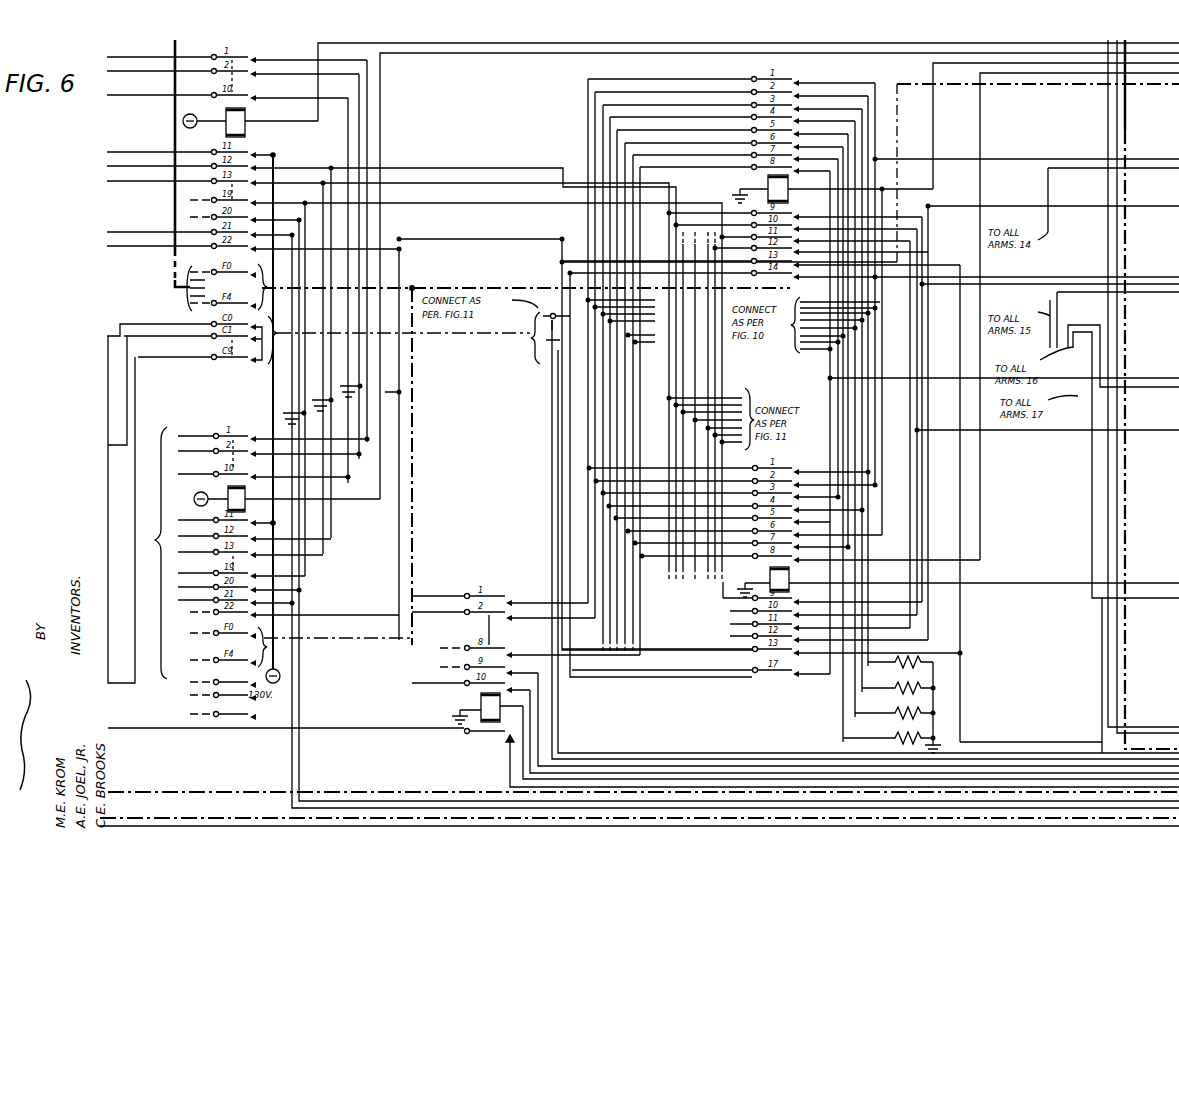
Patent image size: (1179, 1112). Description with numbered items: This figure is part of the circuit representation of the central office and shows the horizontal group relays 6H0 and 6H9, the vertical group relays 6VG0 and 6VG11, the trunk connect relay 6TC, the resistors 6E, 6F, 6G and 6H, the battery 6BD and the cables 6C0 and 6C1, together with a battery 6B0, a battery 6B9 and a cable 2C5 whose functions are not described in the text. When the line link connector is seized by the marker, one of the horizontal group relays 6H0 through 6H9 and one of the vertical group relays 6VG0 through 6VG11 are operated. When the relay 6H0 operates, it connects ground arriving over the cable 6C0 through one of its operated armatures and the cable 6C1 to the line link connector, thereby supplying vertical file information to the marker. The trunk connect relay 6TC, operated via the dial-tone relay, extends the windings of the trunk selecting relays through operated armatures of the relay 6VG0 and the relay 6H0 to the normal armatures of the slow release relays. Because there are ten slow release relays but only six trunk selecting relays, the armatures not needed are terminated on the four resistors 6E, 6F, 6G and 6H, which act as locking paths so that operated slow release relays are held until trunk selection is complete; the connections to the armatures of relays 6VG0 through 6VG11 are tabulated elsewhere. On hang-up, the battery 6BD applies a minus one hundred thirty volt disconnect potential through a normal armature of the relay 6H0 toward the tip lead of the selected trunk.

The battery 6B0 is at (200, 132).
The horizontal group relay 6H0 is at (248, 124).
The cable 6C0 is at (175, 256).
The cable 6C1 is at (455, 287).
The horizontal group relay 6H9 is at (226, 488).
The battery 6B9 is at (195, 501).
The battery 6BD is at (280, 674).
The trunk connect relay 6TC is at (478, 697).
The vertical group relay 6VG0 is at (766, 184).
The vertical group relay 6VG11 is at (770, 574).
The resistor 6E is at (918, 658).
The resistor 6F is at (896, 686).
The resistor 6G is at (895, 712).
The resistor 6H is at (893, 737).
The cable 2C5 is at (120, 791).